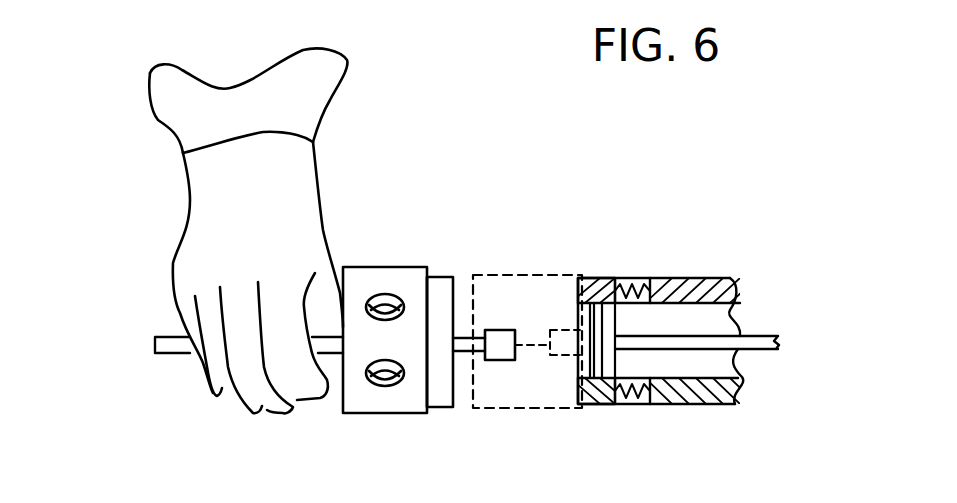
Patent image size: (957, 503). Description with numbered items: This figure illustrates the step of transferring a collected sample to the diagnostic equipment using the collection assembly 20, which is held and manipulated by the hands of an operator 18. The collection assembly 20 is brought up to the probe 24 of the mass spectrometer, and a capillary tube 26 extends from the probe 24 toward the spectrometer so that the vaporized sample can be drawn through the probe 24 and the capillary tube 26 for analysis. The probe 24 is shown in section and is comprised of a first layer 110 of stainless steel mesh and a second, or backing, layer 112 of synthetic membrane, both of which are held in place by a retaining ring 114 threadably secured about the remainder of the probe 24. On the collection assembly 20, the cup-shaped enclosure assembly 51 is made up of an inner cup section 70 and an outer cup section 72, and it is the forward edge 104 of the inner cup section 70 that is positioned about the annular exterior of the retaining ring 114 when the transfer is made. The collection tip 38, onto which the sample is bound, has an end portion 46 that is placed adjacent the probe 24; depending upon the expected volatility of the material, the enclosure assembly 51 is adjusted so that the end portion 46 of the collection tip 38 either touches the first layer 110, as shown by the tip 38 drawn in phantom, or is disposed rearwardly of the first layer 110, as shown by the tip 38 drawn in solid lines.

The operator 18 is at (187, 202).
The collection assembly 20 is at (435, 192).
The probe 24 is at (703, 277).
The capillary tube 26 is at (747, 335).
The collection tip 38 is at (498, 330).
The end portion 46 is at (516, 337).
The enclosure assembly 51 is at (493, 313).
The inner cup section 70 is at (502, 410).
The outer cup section 72 is at (375, 412).
The forward edge 104 is at (455, 277).
The first layer 110 is at (580, 367).
The second layer 112 is at (615, 360).
The retaining ring 114 is at (588, 290).